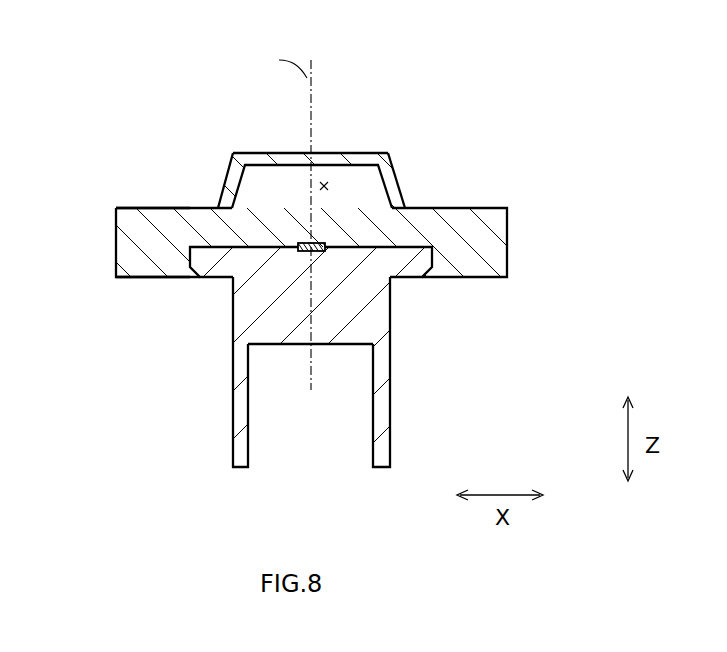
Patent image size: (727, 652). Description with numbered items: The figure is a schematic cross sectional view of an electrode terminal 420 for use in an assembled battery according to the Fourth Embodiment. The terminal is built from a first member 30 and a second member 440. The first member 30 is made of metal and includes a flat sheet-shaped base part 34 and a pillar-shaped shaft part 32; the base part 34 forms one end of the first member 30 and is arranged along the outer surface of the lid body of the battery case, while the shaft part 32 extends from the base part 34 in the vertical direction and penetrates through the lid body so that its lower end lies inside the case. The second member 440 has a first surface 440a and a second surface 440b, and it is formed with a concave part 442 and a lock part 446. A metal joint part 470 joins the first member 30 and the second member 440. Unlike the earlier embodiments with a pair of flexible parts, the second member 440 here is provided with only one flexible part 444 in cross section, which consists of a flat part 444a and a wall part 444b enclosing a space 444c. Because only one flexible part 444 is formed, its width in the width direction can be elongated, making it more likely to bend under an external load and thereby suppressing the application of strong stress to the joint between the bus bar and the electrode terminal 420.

The electrode terminal 420 is at (73, 42).
The second member 440 is at (331, 240).
The first surface of the second member 440a is at (135, 278).
The second surface of the second member 440b is at (146, 207).
The concave part 442 is at (424, 262).
The flexible part 444 is at (350, 145).
The flat part of the flexible part 444a is at (361, 152).
The wall part of the flexible part 444b is at (398, 186).
The space 444c is at (324, 182).
The lock part 446 is at (188, 278).
The metal joint part 470 is at (308, 253).
The first member 30 is at (360, 336).
The shaft part 32 is at (342, 320).
The base part 34 is at (403, 279).